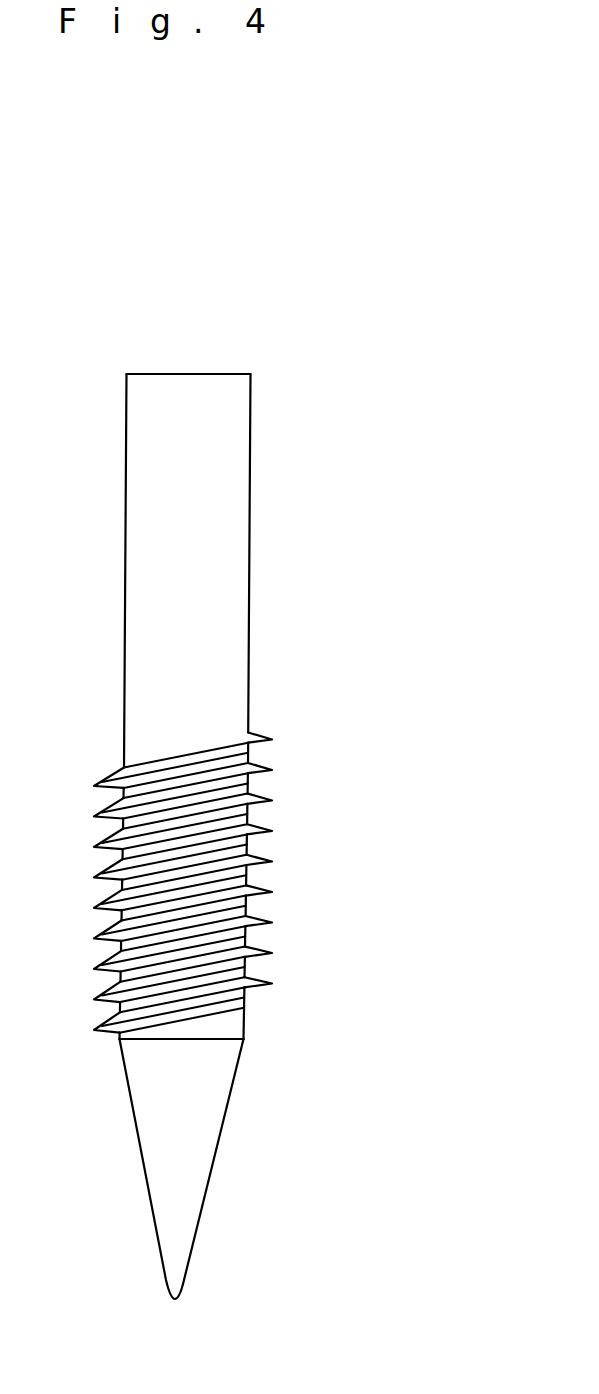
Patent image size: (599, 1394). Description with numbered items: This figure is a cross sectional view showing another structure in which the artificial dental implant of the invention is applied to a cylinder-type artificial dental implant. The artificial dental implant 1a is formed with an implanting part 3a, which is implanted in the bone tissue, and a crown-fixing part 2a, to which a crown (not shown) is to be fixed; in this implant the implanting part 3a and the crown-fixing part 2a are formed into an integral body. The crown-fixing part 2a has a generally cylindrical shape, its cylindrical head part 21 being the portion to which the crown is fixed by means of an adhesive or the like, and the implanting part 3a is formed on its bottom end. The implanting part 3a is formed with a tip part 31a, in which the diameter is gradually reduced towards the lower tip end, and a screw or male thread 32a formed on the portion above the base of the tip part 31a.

The artificial dental implant 1a is at (436, 480).
The crown-fixing part 2a is at (266, 510).
The cylindrical head part 21 is at (185, 453).
The implanting part 3a is at (280, 888).
The tip part 31a is at (193, 1150).
The screw (male thread) 32a is at (261, 958).